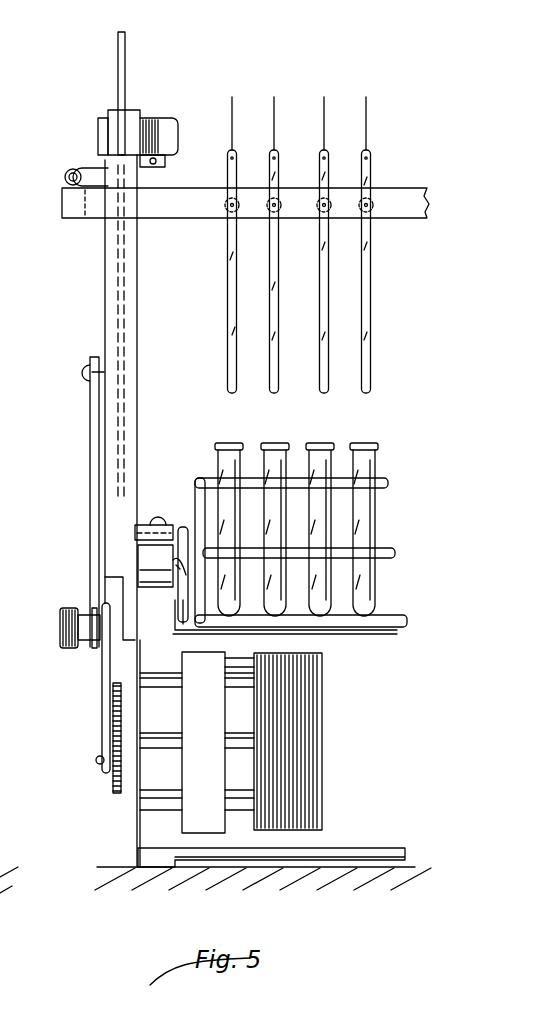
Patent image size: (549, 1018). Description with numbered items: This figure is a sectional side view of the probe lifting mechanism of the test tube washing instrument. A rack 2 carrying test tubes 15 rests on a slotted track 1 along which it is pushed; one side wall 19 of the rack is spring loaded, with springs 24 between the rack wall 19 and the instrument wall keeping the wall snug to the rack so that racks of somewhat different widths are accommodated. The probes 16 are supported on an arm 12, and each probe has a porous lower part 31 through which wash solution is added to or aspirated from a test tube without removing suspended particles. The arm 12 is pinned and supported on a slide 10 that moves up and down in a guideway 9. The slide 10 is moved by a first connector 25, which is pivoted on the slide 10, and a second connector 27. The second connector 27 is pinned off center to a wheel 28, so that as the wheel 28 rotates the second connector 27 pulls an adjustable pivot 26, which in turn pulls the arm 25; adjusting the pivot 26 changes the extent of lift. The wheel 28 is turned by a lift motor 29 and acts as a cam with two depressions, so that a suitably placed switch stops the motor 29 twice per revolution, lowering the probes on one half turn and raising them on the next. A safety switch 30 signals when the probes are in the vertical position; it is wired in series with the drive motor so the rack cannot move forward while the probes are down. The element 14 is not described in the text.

The slotted track 1 is at (190, 612).
The rack 2 is at (195, 633).
The guideway 9 is at (108, 288).
The slide 10 is at (122, 55).
The arm 12 is at (405, 218).
The test tube rack 14 is at (388, 483).
The test tubes 15 is at (375, 462).
The probes 16 is at (368, 160).
The side wall 19 is at (180, 528).
The springs 24 is at (185, 567).
The first connector 25 is at (92, 424).
The adjustable pivot 26 is at (68, 650).
The second connector 27 is at (104, 660).
The wheel 28 is at (116, 796).
The lift motor 29 is at (300, 800).
The safety switch 30 is at (155, 133).
The probe lower part 31 is at (370, 390).